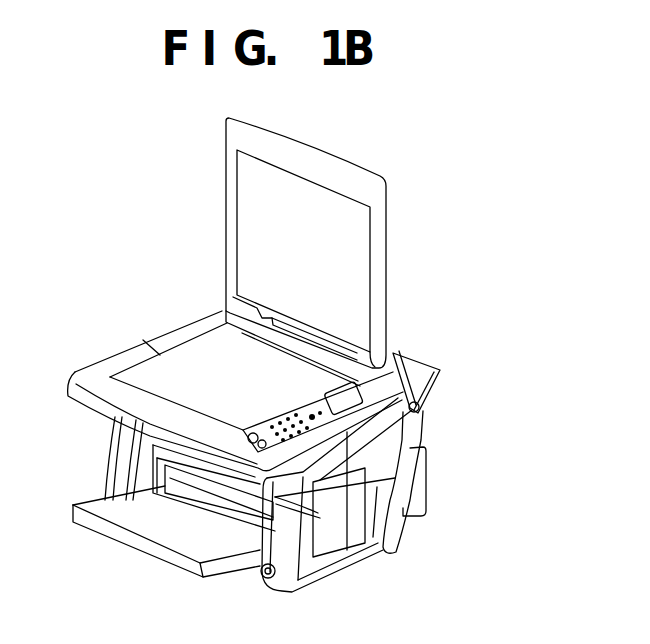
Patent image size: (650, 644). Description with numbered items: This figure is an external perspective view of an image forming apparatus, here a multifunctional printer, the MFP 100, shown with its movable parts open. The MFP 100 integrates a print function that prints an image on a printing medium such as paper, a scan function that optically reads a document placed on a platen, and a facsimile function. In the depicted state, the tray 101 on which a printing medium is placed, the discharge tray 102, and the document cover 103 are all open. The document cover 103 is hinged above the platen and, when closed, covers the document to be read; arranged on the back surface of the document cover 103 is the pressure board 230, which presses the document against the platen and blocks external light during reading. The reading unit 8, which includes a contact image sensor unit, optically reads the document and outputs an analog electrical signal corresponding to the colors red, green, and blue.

The MFP 100 is at (113, 177).
The document cover 103 is at (386, 278).
The pressure board 230 is at (260, 239).
The tray 101 is at (415, 370).
The reading unit 8 is at (420, 410).
The discharge tray 102 is at (173, 540).